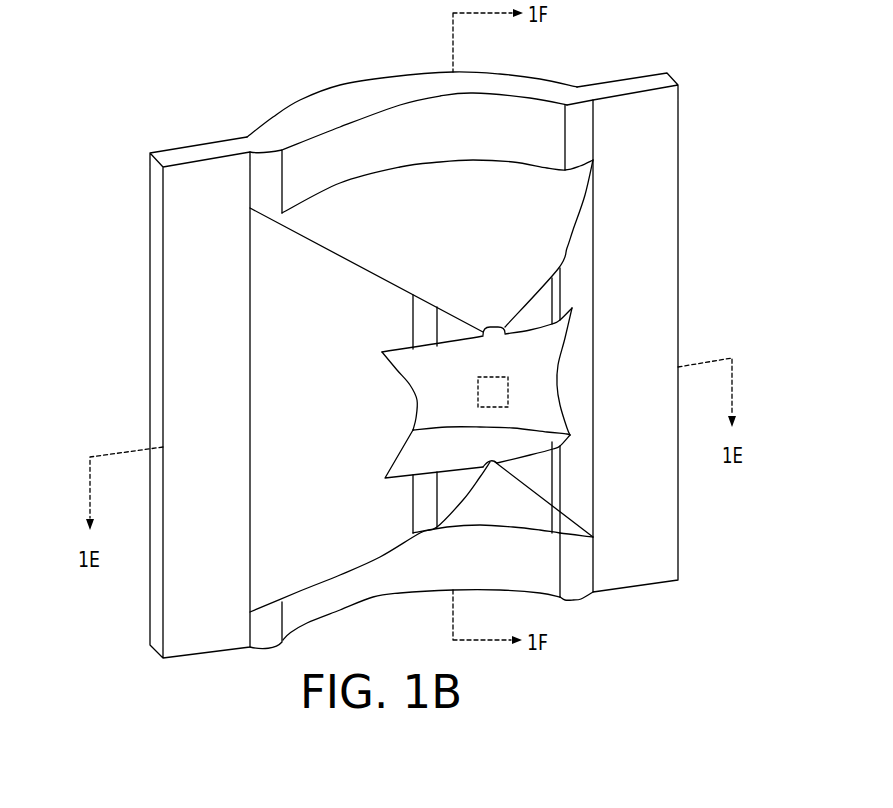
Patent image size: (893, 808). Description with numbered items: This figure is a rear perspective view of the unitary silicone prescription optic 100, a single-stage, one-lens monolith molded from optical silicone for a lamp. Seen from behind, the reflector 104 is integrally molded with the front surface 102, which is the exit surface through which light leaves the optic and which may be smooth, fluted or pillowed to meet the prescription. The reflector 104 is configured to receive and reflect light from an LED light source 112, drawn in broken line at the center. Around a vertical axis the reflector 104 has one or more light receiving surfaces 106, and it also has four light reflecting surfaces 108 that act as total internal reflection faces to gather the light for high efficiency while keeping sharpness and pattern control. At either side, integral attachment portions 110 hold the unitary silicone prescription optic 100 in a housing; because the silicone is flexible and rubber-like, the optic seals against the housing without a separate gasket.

The unitary silicone prescription optic 100 is at (134, 61).
The front surface 102 is at (368, 78).
The reflector 104 is at (320, 540).
The light receiving surfaces 106 is at (550, 412).
The light reflecting surfaces 108 is at (573, 230).
The integral attachment portions 110 is at (668, 163).
The LED light source 112 is at (502, 388).